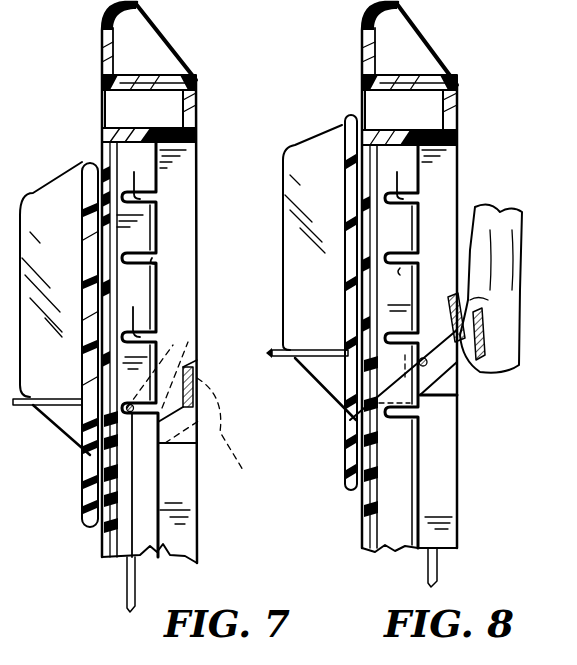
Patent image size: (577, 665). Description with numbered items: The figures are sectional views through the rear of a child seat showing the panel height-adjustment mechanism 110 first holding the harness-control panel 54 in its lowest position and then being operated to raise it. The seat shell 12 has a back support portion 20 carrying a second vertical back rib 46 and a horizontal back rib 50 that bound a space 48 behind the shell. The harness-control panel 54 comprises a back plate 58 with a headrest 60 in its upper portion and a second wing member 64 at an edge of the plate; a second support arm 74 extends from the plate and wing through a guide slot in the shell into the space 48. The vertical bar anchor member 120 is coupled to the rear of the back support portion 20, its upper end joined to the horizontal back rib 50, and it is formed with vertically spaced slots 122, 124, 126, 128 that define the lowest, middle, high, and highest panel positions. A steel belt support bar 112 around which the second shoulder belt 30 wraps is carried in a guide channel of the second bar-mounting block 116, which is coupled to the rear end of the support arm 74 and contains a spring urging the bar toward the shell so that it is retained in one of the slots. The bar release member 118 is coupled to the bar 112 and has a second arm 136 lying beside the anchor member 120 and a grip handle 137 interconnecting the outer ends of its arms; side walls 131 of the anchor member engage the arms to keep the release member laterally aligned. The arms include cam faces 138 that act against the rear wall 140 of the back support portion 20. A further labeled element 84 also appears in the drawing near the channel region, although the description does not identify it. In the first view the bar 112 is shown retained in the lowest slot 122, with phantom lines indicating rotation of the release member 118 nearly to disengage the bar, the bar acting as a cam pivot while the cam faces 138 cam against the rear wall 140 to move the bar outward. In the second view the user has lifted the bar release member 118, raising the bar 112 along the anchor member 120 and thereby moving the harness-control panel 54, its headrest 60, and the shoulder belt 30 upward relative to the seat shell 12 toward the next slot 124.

In FIG. 7, the seat shell 12 is at (91, 54).
In FIG. 8, the seat shell 12 is at (354, 31).
In FIG. 7, the back support portion 20 is at (102, 143).
In FIG. 8, the back support portion 20 is at (362, 165).
In FIG. 7, the second shoulder belt 30 is at (45, 399).
In FIG. 8, the second shoulder belt 30 is at (312, 350).
In FIG. 7, the second vertical back rib 46 is at (185, 205).
In FIG. 8, the second vertical back rib 46 is at (460, 169).
In FIG. 7, the space 48 is at (200, 262).
In FIG. 8, the space 48 is at (463, 199).
In FIG. 7, the horizontal back rib 50 is at (201, 78).
In FIG. 8, the horizontal back rib 50 is at (461, 84).
In FIG. 7, the harness-control panel 54 is at (33, 184).
In FIG. 8, the harness-control panel 54 is at (302, 137).
In FIG. 7, the back plate 58 is at (82, 472).
In FIG. 8, the back plate 58 is at (343, 460).
In FIG. 7, the headrest 60 is at (82, 175).
In FIG. 8, the headrest 60 is at (348, 133).
In FIG. 7, the second wing member 64 is at (61, 226).
In FIG. 8, the second wing member 64 is at (297, 266).
In FIG. 7, the second support arm 74 is at (95, 385).
In FIG. 8, the second support arm 74 is at (353, 355).
In FIG. 7, the inner channel 84 is at (110, 232).
In FIG. 8, the inner channel 84 is at (370, 243).
In FIG. 7, the panel height-adjustment mechanism 110 is at (203, 155).
In FIG. 8, the panel height-adjustment mechanism 110 is at (441, 430).
In FIG. 7, the belt support bar 112 is at (200, 352).
In FIG. 8, the belt support bar 112 is at (407, 356).
In FIG. 7, the second bar-mounting block 116 is at (177, 433).
In FIG. 7, the bar release member 118 is at (201, 377).
In FIG. 8, the bar release member 118 is at (455, 332).
In FIG. 7, the vertical bar anchor member 120 is at (160, 292).
In FIG. 8, the vertical bar anchor member 120 is at (421, 232).
In FIG. 7, the slot 122 is at (137, 405).
In FIG. 8, the slot 122 is at (400, 420).
In FIG. 7, the slot 124 is at (134, 311).
In FIG. 8, the slot 124 is at (340, 420).
In FIG. 7, the slot 126 is at (155, 262).
In FIG. 8, the slot 126 is at (398, 289).
In FIG. 7, the slot 128 is at (134, 174).
In FIG. 8, the slot 128 is at (399, 174).
In FIG. 7, the side wall 131 is at (143, 535).
In FIG. 8, the side wall 131 is at (408, 507).
In FIG. 7, the second arm 136 is at (197, 372).
In FIG. 8, the second arm 136 is at (478, 453).
In FIG. 7, the grip handle 137 is at (204, 390).
In FIG. 8, the grip handle 137 is at (483, 338).
In FIG. 7, the cam faces 138 is at (90, 453).
In FIG. 8, the cam faces 138 is at (355, 430).
In FIG. 7, the rear wall 140 is at (118, 470).
In FIG. 8, the rear wall 140 is at (353, 472).